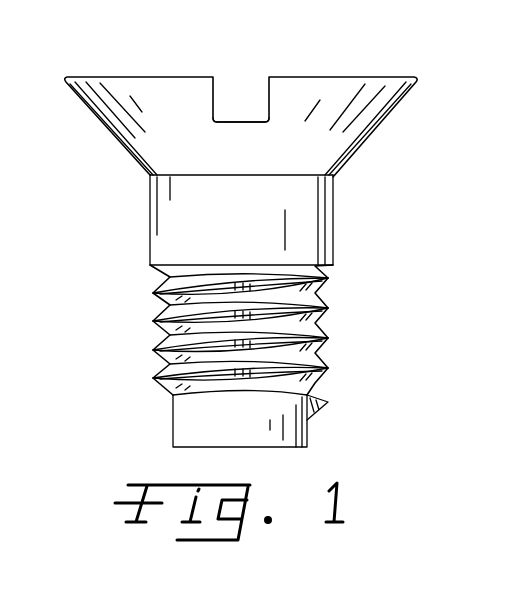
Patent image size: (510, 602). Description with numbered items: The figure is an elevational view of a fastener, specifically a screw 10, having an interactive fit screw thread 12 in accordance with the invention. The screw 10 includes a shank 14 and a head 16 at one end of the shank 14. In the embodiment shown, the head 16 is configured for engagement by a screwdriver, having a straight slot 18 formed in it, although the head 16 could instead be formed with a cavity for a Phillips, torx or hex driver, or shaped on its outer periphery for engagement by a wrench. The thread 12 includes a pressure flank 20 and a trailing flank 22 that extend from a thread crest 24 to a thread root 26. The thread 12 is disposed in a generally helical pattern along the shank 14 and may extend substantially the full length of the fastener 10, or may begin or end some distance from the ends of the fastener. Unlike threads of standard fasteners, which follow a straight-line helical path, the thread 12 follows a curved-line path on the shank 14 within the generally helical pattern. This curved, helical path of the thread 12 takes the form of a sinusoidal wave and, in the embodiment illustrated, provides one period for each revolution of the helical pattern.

The screw 10 is at (250, 230).
The interactive fit screw thread 12 is at (252, 335).
The shank 14 is at (175, 417).
The head 16 is at (392, 101).
The slot 18 is at (239, 97).
The pressure flank 20 is at (167, 287).
The trailing flank 22 is at (157, 307).
The thread crest 24 is at (155, 300).
The thread root 26 is at (160, 338).